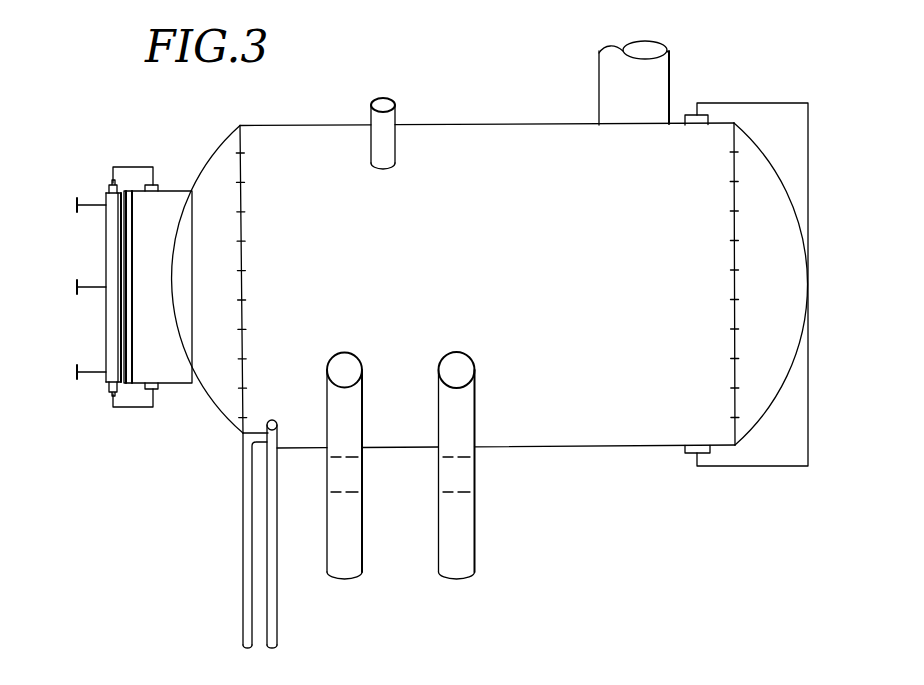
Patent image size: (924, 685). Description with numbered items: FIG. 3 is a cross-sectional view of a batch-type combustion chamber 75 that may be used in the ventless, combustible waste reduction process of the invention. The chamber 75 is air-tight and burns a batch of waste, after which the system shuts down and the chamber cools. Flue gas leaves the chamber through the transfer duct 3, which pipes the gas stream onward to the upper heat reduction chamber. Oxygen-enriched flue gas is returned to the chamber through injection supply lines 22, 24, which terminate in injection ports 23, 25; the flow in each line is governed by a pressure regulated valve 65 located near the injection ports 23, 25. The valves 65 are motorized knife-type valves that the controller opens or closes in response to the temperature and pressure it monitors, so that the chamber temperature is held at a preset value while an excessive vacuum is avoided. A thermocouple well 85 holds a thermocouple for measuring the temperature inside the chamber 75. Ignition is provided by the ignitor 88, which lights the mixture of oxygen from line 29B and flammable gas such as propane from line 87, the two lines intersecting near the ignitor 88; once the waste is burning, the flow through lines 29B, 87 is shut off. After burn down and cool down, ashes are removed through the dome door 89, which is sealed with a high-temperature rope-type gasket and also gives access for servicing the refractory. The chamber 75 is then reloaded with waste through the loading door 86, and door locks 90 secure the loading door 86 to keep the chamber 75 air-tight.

The transfer duct 3 is at (657, 72).
The injection supply line 22 is at (352, 550).
The injection port 23 is at (353, 353).
The injection supply line 24 is at (465, 550).
The injection port 25 is at (465, 353).
The oxygen supply line 29B is at (278, 628).
The pressure regulated valve 65 is at (352, 473).
The batch-type combustion chamber 75 is at (488, 110).
The thermocouple well 85 is at (396, 92).
The loading door 86 is at (103, 176).
The flammable gas line 87 is at (243, 631).
The ignitor 88 is at (271, 418).
The dome door 89 is at (815, 283).
The door lock 90 is at (58, 287).